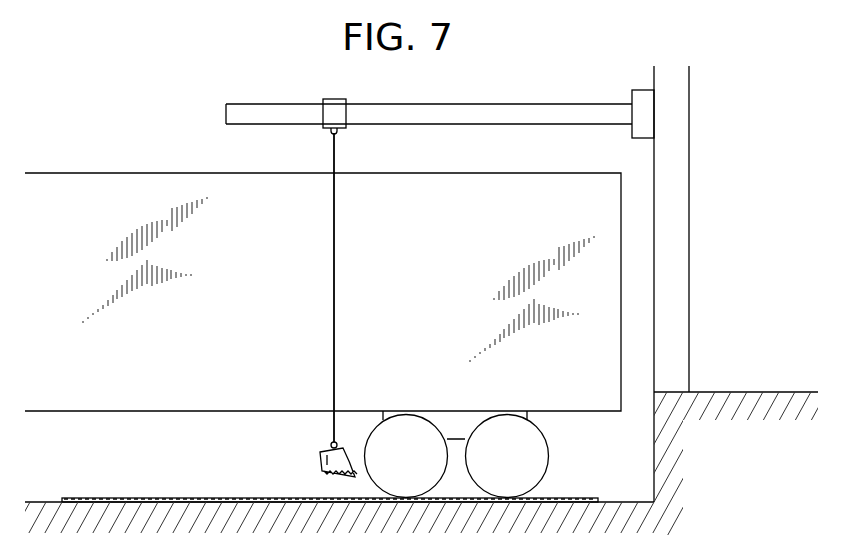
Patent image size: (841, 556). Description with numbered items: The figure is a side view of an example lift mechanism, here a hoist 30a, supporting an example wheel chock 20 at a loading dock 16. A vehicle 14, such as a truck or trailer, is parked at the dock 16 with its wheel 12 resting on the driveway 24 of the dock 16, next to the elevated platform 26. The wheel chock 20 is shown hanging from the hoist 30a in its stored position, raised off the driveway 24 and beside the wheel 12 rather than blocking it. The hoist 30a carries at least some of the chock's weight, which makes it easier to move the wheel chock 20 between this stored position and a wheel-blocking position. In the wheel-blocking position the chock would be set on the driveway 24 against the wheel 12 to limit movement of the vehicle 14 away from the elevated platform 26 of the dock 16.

The wheel 12 is at (437, 428).
The vehicle 14 is at (127, 173).
The loading dock 16 is at (608, 473).
The wheel chock 20 is at (318, 462).
The driveway 24 is at (45, 500).
The elevated platform 26 is at (743, 391).
The hoist 30a is at (333, 336).